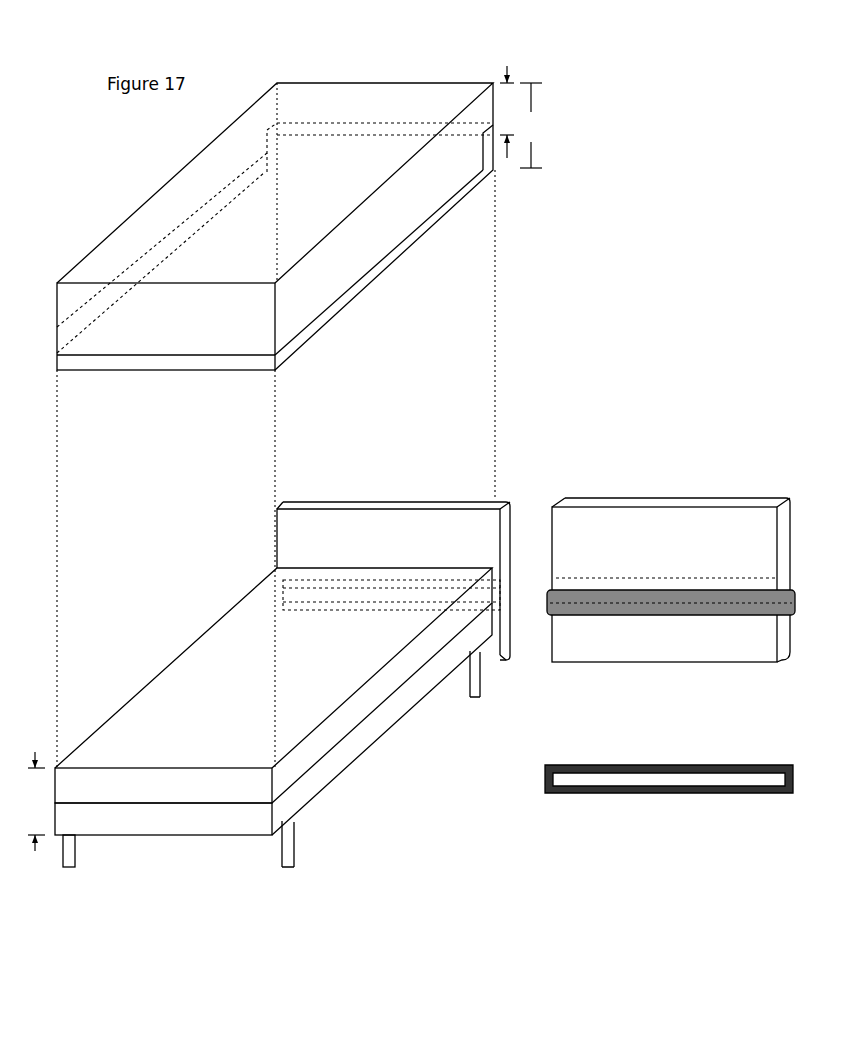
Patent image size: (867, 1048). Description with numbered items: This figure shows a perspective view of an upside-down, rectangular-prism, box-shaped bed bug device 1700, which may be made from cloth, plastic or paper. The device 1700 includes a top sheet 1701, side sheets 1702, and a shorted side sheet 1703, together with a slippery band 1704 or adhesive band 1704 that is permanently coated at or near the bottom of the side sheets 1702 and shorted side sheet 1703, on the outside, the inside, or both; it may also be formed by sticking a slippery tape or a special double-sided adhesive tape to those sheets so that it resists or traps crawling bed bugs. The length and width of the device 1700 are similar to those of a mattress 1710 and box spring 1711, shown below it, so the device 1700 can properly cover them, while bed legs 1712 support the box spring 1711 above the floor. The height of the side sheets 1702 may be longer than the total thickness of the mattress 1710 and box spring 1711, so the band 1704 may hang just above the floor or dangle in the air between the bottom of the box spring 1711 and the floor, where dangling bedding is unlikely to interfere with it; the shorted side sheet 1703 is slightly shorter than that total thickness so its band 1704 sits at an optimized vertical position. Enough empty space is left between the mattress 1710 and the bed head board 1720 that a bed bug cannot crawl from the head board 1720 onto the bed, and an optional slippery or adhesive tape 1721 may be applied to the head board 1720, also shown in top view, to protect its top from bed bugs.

The bed bug device 1700 is at (411, 476).
The top sheet 1701 is at (183, 200).
The side sheets 1702 is at (293, 298).
The shorted side sheet 1703 is at (400, 108).
The slippery band or adhesive band 1704 is at (412, 232).
The mattress 1710 is at (380, 687).
The box spring 1711 is at (355, 745).
The bed legs 1712 is at (288, 870).
The bed head board 1720 is at (643, 522).
The slippery or adhesive tape 1721 is at (612, 603).